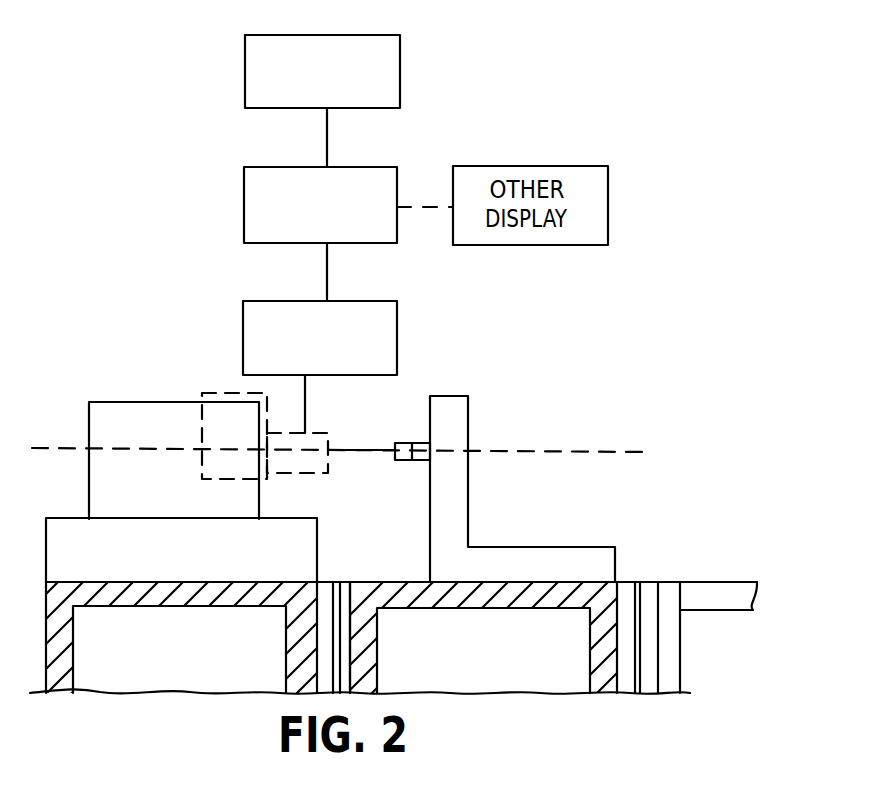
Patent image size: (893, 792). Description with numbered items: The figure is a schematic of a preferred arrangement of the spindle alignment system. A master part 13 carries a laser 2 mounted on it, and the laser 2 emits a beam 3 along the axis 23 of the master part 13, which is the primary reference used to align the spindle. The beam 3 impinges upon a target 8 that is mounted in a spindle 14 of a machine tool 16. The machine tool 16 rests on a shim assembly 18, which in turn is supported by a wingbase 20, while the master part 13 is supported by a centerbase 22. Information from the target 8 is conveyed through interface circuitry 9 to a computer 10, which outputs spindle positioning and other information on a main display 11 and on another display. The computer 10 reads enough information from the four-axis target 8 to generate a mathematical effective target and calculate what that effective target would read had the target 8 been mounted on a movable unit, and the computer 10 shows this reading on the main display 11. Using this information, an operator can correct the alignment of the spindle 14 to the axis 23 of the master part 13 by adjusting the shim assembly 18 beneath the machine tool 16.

The laser 2 is at (402, 443).
The beam 3 is at (360, 452).
The target 8 is at (313, 433).
The interface circuitry 9 is at (378, 301).
The computer 10 is at (377, 167).
The main display 11 is at (397, 36).
The master part 13 is at (458, 433).
The spindle 14 is at (215, 447).
The machine tool 16 is at (86, 410).
The shim assembly 18 is at (318, 519).
The wingbase 20 is at (353, 582).
The centerbase 22 is at (605, 583).
The axis 23 is at (608, 452).